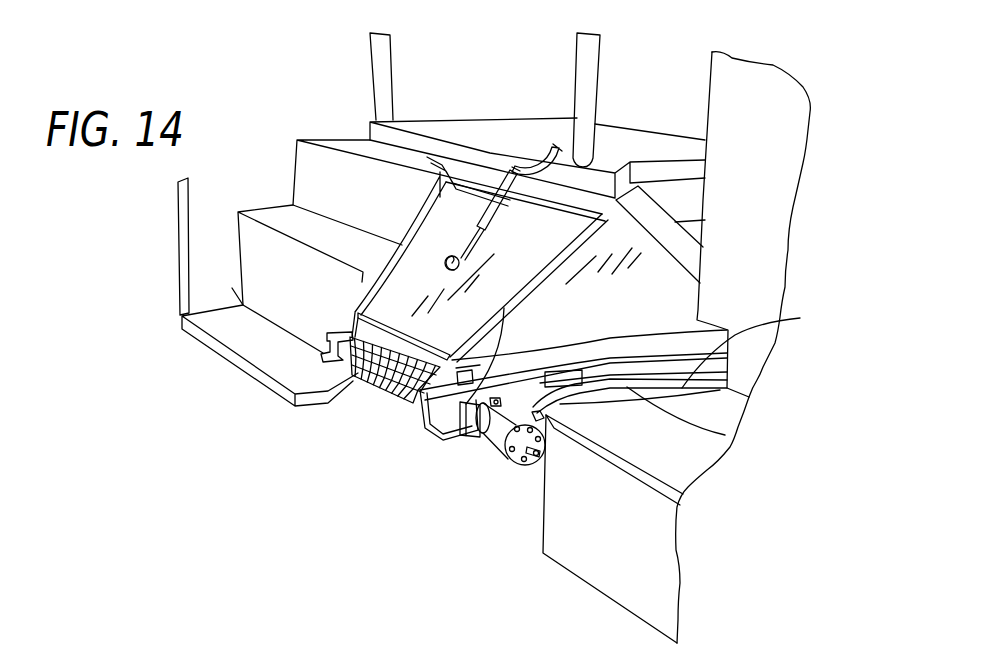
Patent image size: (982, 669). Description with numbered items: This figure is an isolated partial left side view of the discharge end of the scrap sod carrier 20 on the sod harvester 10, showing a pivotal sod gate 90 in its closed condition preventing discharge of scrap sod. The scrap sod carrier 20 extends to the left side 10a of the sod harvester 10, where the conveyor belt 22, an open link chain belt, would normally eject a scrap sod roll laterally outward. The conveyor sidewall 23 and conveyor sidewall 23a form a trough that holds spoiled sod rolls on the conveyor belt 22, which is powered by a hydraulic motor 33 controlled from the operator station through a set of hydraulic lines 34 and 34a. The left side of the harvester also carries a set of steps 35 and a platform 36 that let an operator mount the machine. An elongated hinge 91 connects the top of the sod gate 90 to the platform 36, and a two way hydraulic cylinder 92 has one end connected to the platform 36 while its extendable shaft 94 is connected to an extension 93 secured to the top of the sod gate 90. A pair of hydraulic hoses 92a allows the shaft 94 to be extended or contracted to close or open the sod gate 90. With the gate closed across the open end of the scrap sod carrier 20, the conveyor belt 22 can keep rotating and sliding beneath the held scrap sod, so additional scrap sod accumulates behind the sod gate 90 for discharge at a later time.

The sod harvester 10 is at (238, 130).
The left side of the sod harvester 10a is at (595, 548).
The scrap sod carrier 20 is at (365, 431).
The conveyor belt 22 is at (383, 392).
The conveyor sidewall 23 is at (400, 250).
The conveyor sidewall 23a is at (476, 427).
The hydraulic motor 33 is at (521, 466).
The hydraulic line 34 is at (725, 435).
The hydraulic line 34a is at (692, 358).
The steps 35 is at (232, 328).
The platform 36 is at (473, 123).
The sod gate 90 is at (423, 260).
The elongated hinge 91 is at (599, 126).
The two way hydraulic cylinder 92 is at (498, 182).
The hydraulic hoses 92a is at (559, 147).
The extension 93 is at (444, 258).
The extendable shaft 94 is at (457, 248).